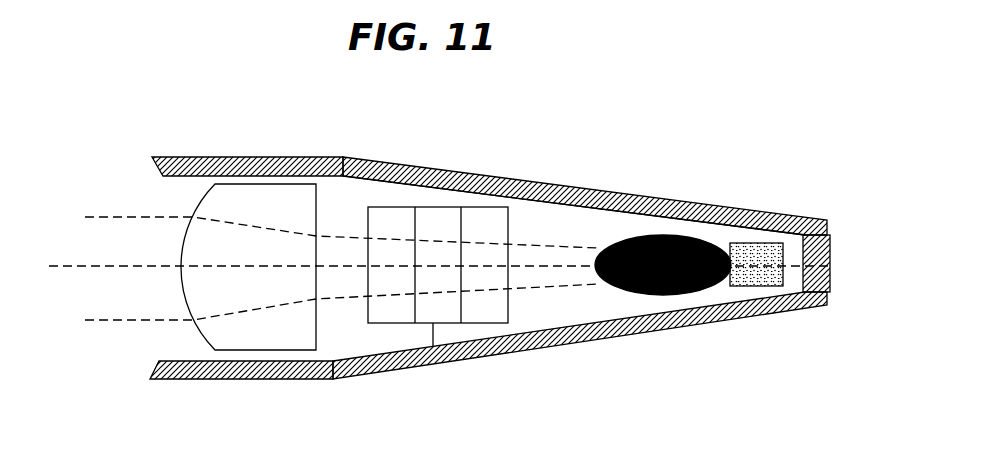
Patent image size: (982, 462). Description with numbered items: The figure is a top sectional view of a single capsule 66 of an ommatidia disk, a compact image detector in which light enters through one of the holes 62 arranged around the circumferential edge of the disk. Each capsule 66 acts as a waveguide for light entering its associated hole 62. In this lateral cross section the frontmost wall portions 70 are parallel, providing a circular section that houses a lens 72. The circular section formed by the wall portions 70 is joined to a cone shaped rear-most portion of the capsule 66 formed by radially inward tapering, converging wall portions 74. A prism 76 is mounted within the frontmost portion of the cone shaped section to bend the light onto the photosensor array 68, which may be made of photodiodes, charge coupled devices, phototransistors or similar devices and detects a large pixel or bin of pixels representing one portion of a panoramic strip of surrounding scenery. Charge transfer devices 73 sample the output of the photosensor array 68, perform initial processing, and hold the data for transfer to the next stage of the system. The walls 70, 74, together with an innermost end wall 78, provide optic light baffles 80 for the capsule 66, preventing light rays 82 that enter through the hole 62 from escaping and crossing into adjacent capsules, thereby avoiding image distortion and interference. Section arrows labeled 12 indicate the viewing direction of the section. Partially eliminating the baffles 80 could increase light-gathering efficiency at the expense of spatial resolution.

The section line / viewing direction 12 is at (49, 210).
The hole 62 is at (163, 193).
The capsule 66 is at (620, 195).
The photosensor array 68 is at (665, 297).
The frontmost wall portions 70 is at (208, 157).
The lens 72 is at (253, 350).
The charge transfer devices 73 is at (760, 243).
The converging wall portions 74 is at (547, 347).
The prism 76 is at (428, 365).
The innermost end wall 78 is at (831, 285).
The optic light baffles 80 is at (415, 170).
The light rays 82 is at (118, 320).